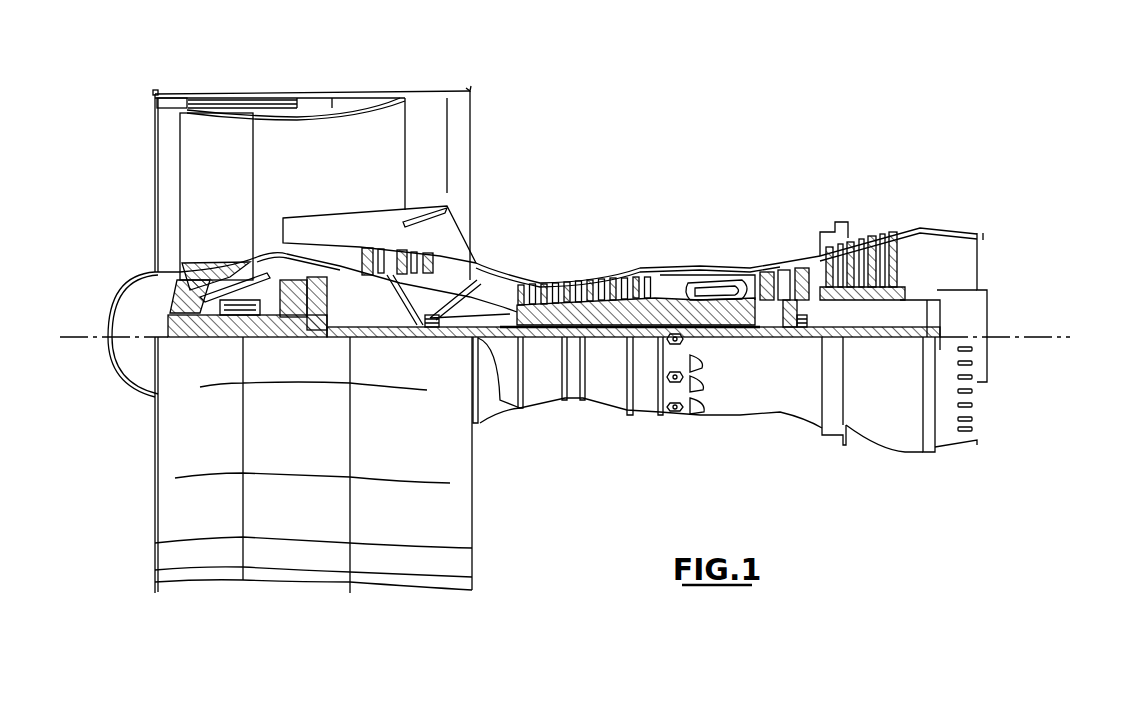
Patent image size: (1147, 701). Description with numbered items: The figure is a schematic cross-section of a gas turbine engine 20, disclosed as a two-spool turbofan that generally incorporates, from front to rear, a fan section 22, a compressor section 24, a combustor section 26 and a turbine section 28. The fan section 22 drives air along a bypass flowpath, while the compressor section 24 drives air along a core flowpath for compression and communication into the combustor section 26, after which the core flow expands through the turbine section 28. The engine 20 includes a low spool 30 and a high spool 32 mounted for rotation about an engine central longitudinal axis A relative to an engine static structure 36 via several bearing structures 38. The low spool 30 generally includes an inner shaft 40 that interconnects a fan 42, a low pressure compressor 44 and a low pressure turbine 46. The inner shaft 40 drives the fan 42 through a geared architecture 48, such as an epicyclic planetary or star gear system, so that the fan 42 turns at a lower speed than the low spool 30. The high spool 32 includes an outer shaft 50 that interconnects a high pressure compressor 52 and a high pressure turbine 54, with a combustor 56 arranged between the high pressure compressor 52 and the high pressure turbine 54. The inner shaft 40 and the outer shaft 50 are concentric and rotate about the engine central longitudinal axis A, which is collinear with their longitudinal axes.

The gas turbine engine 20 is at (716, 135).
The fan section 22 is at (250, 86).
The compressor section 24 is at (519, 257).
The combustor section 26 is at (708, 249).
The turbine section 28 is at (841, 212).
The low spool 30 is at (608, 342).
The high spool 32 is at (648, 283).
The engine static structure 36 is at (643, 414).
The bearing structures 38 is at (433, 337).
The inner shaft 40 is at (493, 410).
The fan 42 is at (202, 202).
The low pressure compressor 44 is at (415, 253).
The low pressure turbine 46 is at (877, 233).
The geared architecture 48 is at (318, 330).
The outer shaft 50 is at (717, 340).
The high pressure compressor 52 is at (582, 280).
The high pressure turbine 54 is at (765, 270).
The combustor 56 is at (708, 288).
The engine central longitudinal axis A is at (1057, 336).